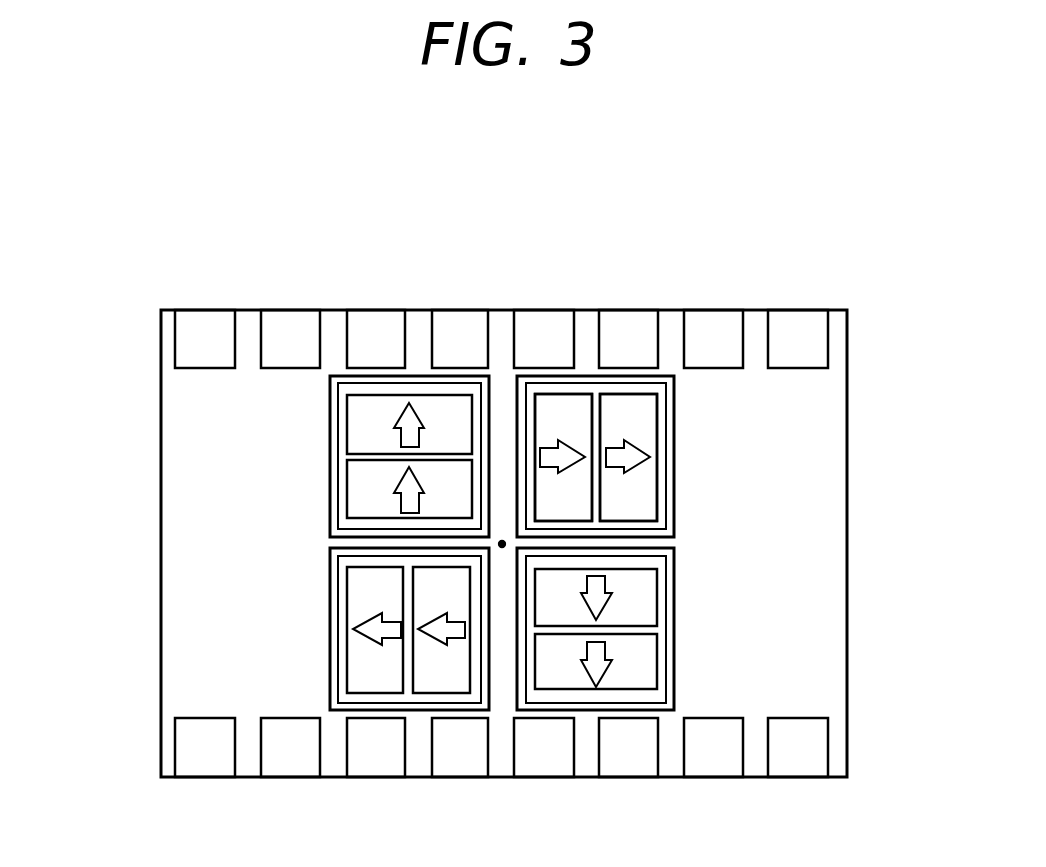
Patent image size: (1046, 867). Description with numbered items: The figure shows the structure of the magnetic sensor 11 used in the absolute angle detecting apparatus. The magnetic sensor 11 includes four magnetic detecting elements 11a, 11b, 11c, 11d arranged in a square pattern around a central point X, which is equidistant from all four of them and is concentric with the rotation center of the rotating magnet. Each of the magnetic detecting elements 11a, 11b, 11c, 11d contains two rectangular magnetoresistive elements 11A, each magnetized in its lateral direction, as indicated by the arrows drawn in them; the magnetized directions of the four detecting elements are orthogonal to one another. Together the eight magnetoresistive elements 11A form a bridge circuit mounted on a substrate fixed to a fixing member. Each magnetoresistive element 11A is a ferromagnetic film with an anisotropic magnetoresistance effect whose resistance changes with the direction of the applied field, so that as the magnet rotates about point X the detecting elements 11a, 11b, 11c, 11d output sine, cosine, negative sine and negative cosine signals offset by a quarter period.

The magnetic sensor 11 is at (431, 266).
The magnetoresistive element 11A is at (583, 395).
The magnetic detecting element 11a is at (330, 468).
The magnetic detecting element 11b is at (674, 480).
The magnetic detecting element 11c is at (674, 627).
The magnetic detecting element 11d is at (330, 617).
The point X is at (502, 547).